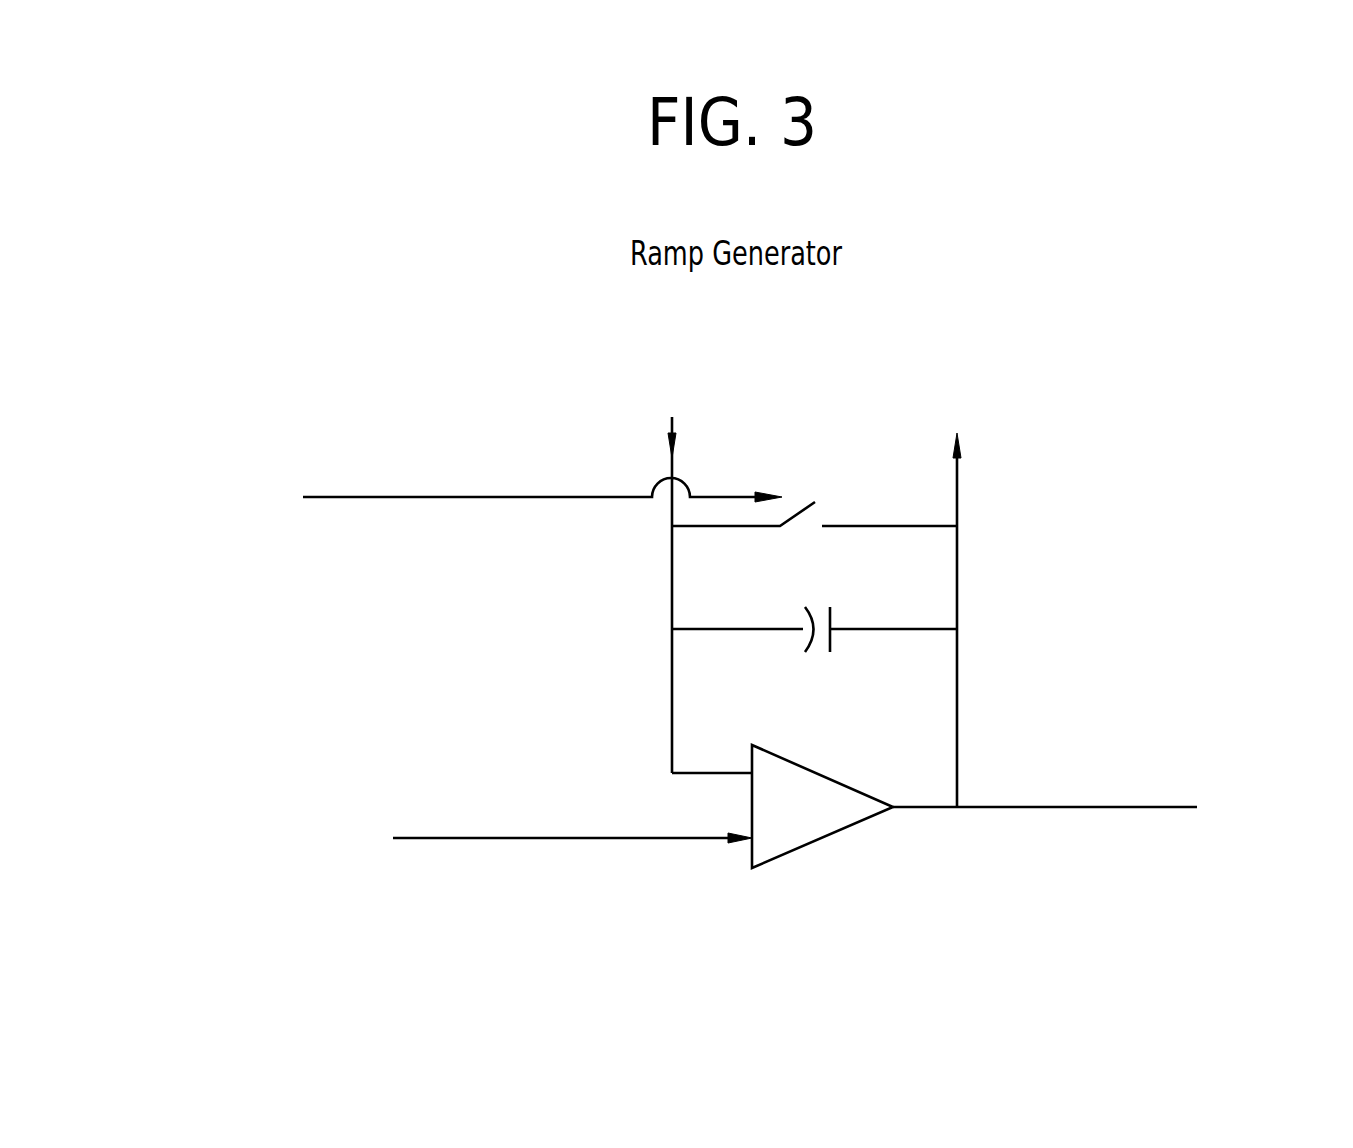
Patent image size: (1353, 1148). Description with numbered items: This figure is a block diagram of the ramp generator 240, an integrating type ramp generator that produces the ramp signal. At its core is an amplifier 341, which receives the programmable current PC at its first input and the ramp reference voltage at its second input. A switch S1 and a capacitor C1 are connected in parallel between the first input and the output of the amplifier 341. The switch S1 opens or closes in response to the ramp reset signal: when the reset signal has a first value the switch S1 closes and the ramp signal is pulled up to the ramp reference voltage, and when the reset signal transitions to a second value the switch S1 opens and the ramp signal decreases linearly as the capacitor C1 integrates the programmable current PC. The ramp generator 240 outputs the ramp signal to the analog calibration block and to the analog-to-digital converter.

The ramp generator 240 is at (1163, 322).
The amplifier 341 is at (827, 837).
The switch S1 is at (814, 497).
The capacitor C1 is at (814, 610).
The programmable current PC is at (674, 575).